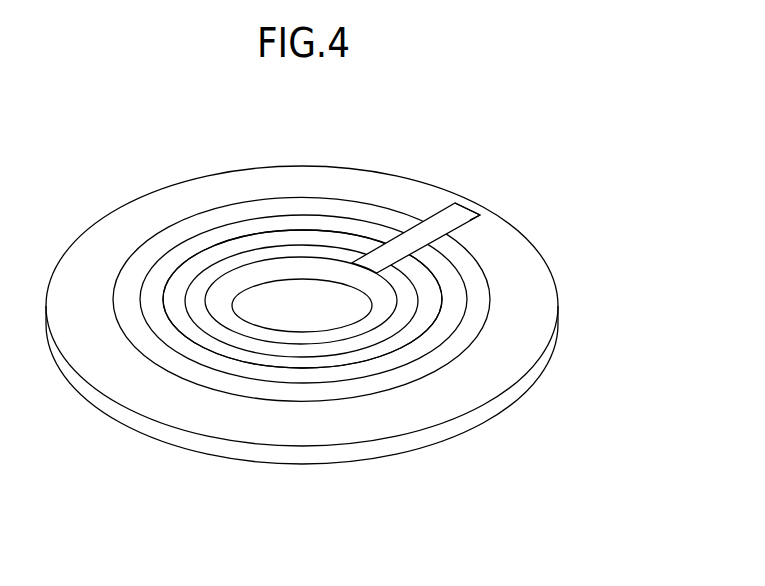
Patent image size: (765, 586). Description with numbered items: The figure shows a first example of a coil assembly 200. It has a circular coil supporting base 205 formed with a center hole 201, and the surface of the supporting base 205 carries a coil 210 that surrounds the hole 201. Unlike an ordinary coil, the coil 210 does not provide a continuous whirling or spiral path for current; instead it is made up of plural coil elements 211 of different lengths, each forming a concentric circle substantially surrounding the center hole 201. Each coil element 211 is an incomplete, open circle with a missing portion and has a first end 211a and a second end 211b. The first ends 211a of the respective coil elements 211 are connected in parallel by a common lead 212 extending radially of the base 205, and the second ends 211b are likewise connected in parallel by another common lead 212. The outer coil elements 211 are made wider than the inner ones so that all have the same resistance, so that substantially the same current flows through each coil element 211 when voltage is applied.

The coil assembly 200 is at (413, 158).
The center hole 201 is at (307, 278).
The coil supporting base 205 is at (540, 318).
The coil 210 is at (194, 233).
The coil element 211 is at (462, 296).
The first end 211a is at (480, 214).
The second end 211b is at (412, 213).
The common lead 212 is at (456, 203).